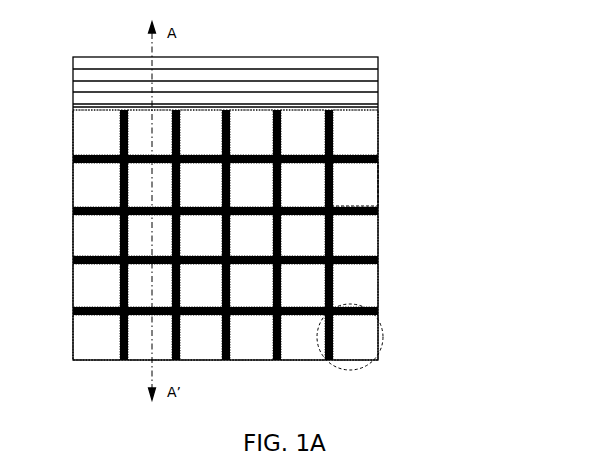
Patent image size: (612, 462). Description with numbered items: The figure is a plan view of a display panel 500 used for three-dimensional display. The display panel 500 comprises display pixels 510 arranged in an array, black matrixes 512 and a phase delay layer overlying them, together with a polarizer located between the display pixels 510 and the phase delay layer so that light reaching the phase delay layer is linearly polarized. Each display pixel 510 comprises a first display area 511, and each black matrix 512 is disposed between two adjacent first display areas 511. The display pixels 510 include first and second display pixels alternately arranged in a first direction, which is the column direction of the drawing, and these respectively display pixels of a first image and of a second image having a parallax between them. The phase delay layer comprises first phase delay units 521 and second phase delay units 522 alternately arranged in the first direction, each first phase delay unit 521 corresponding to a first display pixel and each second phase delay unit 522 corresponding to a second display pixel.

The display panel 500 is at (404, 31).
The first phase delay unit 521 is at (377, 83).
The second phase delay unit 522 is at (377, 137).
The first display area 511 is at (377, 185).
The black matrix 512 is at (377, 258).
The display pixel 510 is at (385, 338).